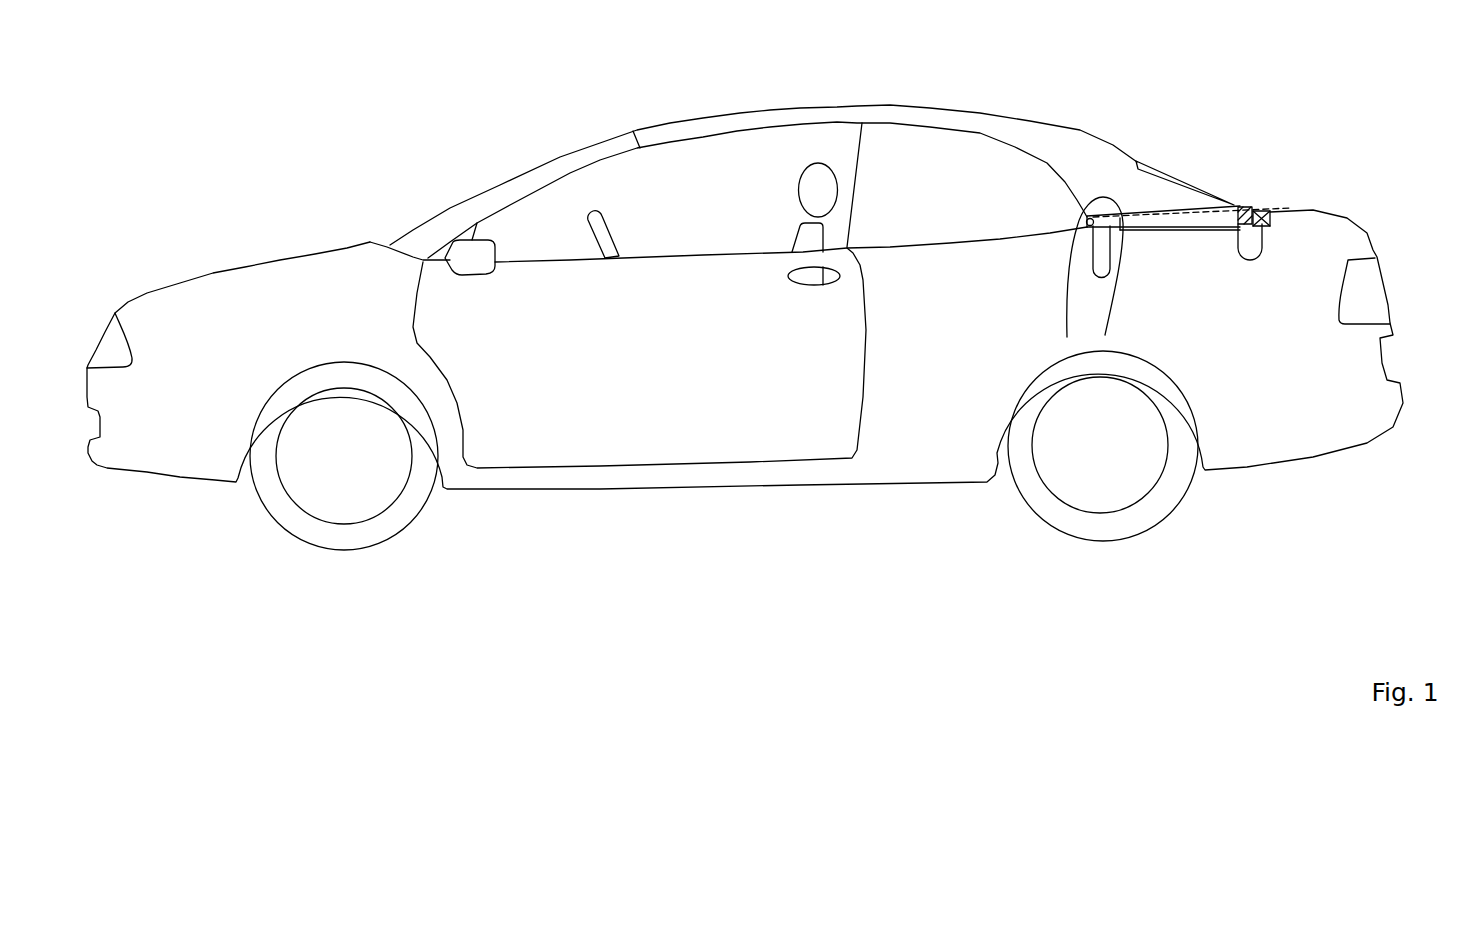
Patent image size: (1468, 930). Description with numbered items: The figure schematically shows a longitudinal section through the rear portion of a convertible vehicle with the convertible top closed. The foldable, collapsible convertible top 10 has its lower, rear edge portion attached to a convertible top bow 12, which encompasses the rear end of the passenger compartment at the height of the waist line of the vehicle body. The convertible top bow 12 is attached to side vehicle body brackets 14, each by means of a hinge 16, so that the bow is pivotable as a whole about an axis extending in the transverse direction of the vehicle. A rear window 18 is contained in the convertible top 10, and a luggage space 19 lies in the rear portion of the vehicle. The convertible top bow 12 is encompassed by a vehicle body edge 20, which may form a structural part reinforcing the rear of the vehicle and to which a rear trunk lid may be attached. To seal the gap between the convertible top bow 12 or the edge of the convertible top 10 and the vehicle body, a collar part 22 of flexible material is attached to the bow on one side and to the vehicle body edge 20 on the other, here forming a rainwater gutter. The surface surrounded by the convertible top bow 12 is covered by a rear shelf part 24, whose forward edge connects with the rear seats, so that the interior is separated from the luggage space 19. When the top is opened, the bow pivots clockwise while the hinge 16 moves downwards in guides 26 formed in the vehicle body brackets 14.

The convertible top 10 is at (1110, 147).
The convertible top bow 12 is at (1117, 218).
The vehicle body bracket 14 is at (1080, 307).
The hinge 16 is at (1087, 217).
The rear window 18 is at (1151, 163).
The luggage space 19 is at (1248, 318).
The vehicle body edge 20 is at (1270, 208).
The collar part 22 is at (1263, 233).
The rear shelf part 24 is at (1178, 230).
The guide 26 is at (1100, 258).